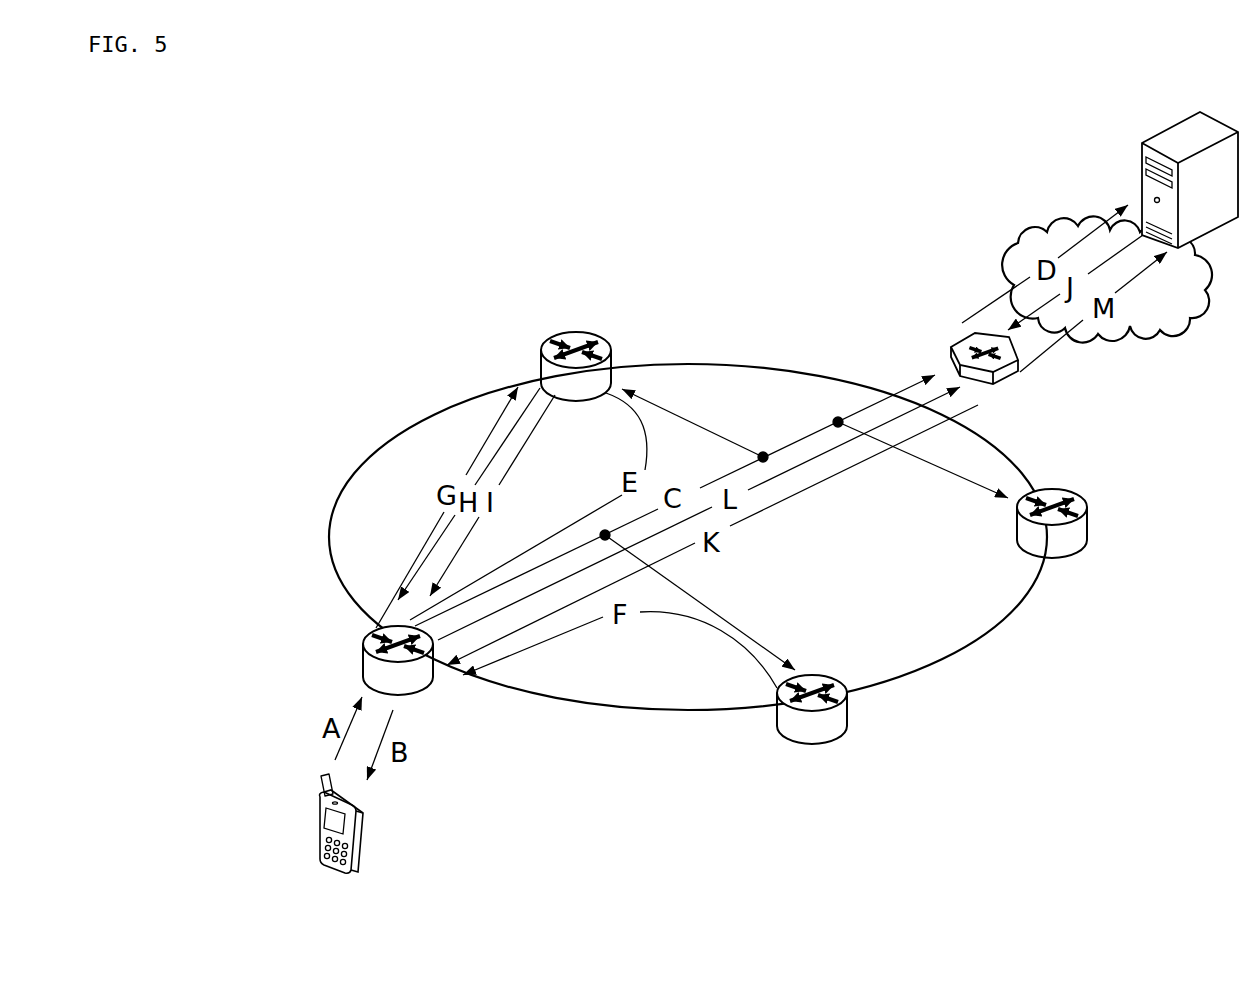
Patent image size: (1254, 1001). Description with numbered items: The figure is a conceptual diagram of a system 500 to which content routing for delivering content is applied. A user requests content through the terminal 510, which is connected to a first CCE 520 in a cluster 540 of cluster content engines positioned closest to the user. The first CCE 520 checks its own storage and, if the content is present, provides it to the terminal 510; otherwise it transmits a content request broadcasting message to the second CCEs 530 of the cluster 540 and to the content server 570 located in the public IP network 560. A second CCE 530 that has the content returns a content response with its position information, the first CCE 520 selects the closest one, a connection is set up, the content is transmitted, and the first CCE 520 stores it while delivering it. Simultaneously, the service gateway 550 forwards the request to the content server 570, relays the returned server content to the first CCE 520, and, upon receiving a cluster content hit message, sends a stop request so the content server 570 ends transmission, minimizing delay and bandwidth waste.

The system 500 is at (675, 180).
The terminal 510 is at (365, 830).
The first CCE 520 is at (367, 660).
The second CCEs 530 is at (608, 347).
The cluster 540 is at (1010, 612).
The service gateway 550 is at (952, 347).
The public IP network 560 is at (1013, 258).
The content server 570 is at (1143, 187).